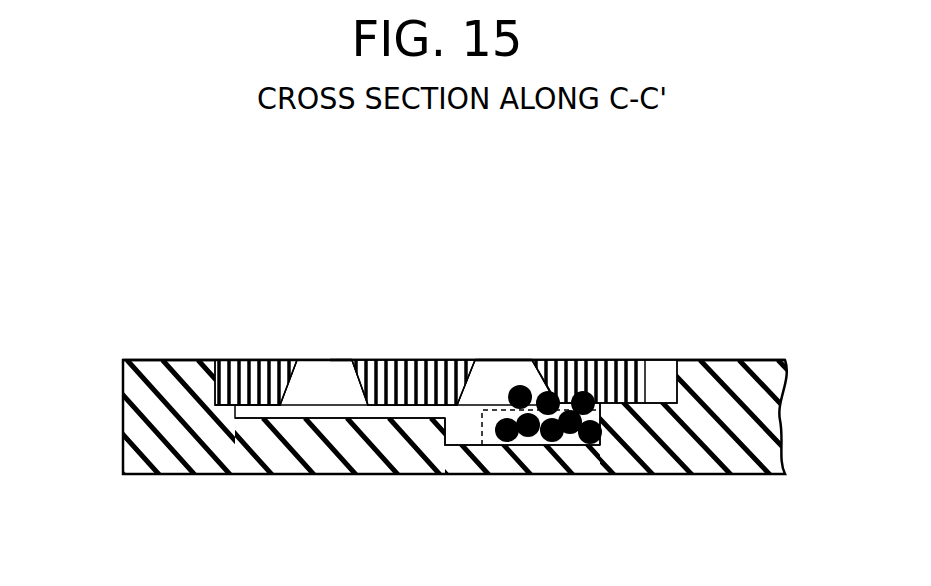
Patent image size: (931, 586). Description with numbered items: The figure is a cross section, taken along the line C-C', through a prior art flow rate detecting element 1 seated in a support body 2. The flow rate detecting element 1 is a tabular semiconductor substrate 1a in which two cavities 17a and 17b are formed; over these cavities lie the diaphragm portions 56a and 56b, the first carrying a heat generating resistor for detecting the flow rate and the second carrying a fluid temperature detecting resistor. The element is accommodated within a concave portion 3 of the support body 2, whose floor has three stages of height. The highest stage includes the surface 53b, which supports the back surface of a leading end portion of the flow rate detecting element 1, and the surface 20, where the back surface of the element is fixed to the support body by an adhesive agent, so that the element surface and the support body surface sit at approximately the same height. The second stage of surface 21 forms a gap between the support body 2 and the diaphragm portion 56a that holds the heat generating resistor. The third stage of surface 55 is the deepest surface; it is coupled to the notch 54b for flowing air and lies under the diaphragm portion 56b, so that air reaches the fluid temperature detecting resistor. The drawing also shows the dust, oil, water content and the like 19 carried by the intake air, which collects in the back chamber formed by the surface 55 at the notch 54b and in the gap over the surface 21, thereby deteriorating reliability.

The flow rate detecting element 1 is at (250, 358).
The tabular semiconductor substrate 1a is at (400, 357).
The support body 2 is at (133, 422).
The concave portion 3 is at (227, 358).
The cavity 17a is at (313, 358).
The cavity 17b is at (505, 357).
The dust, oil, water content and the like 19 is at (566, 396).
The surface 20 is at (653, 405).
The second stage of surface 21 is at (313, 410).
The surface 53b is at (215, 407).
The notch 54b is at (455, 448).
The third stage of surface 55 is at (535, 445).
The diaphragm portion 56a is at (340, 357).
The diaphragm portion 56b is at (490, 357).